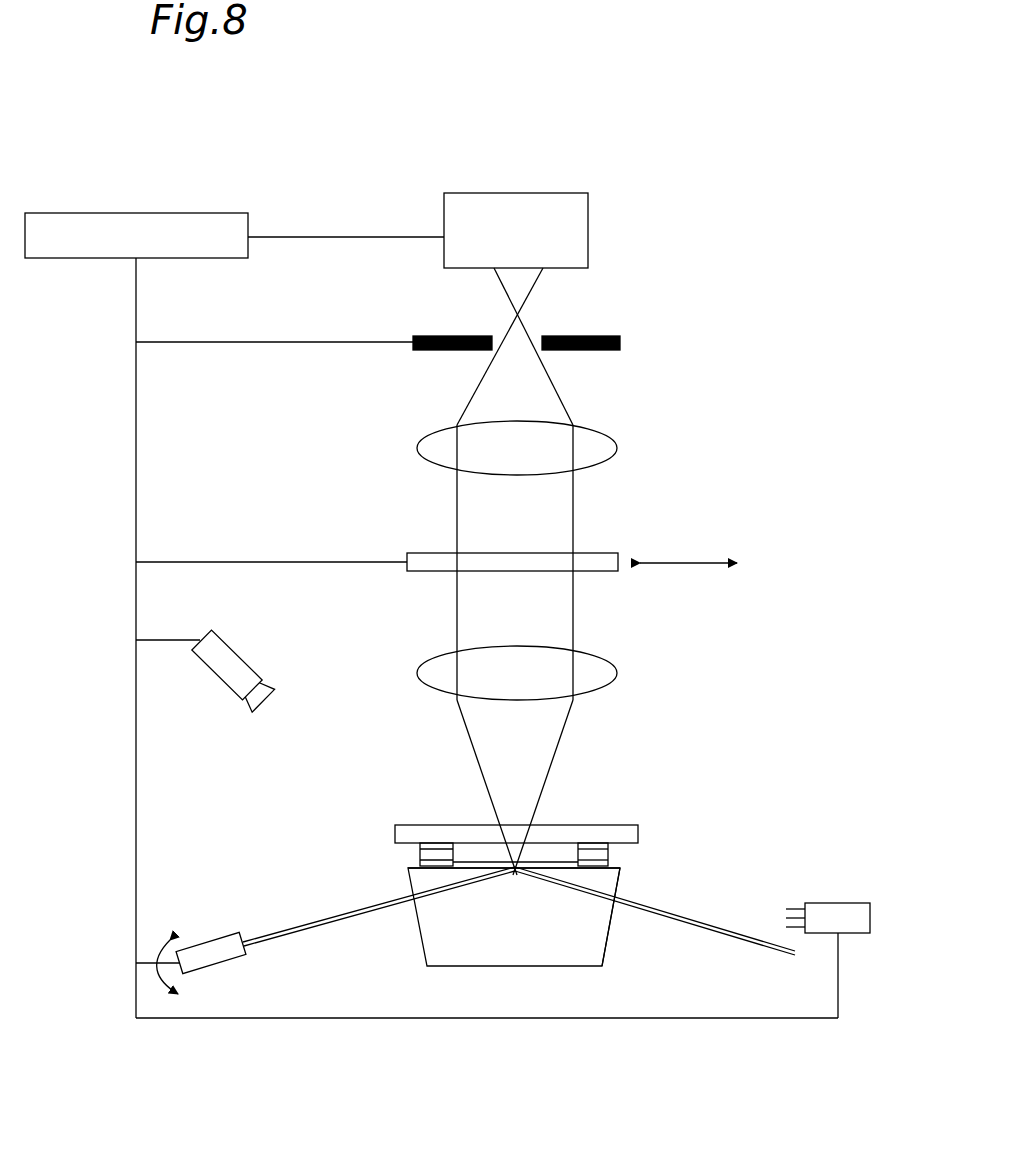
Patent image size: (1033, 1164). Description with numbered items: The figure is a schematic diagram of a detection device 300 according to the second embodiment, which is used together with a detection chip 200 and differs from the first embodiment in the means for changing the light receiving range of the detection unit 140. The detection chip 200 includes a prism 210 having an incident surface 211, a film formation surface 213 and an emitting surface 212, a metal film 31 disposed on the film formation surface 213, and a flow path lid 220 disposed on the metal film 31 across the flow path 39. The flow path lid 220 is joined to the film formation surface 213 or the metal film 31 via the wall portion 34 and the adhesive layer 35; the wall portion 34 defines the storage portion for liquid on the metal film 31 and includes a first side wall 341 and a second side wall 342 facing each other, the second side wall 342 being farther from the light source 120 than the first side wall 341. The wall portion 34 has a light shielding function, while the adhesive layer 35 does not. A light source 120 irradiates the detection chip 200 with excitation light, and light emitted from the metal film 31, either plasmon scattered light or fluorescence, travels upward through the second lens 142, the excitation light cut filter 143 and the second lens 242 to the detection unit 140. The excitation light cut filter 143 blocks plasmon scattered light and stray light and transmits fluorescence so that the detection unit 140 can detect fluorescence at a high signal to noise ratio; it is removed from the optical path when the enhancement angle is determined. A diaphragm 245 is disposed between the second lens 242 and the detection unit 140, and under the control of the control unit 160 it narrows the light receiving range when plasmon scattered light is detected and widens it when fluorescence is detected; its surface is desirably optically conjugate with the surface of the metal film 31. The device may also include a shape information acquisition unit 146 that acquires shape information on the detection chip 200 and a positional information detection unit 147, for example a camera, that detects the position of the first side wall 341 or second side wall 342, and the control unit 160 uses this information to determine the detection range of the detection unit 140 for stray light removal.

The control unit 160 is at (125, 213).
The detection device 300 is at (772, 245).
The detection unit 140 is at (588, 237).
The diaphragm 245 is at (565, 338).
The second lens 242 is at (417, 448).
The excitation light cut filter 143 is at (407, 558).
The positional information detection unit 147 is at (240, 650).
The second lens 142 is at (417, 673).
The detection chip 200 is at (526, 856).
The flow path lid 220 is at (637, 830).
The wall portion 34 is at (538, 860).
The first side wall 341 is at (420, 856).
The second side wall 342 is at (608, 858).
The adhesive layer 35 is at (608, 847).
The metal film 31 is at (540, 862).
The flow path 39 is at (473, 857).
The prism 210 is at (448, 933).
The incident surface 211 is at (405, 892).
The film formation surface 213 is at (557, 873).
The emitting surface 212 is at (605, 945).
The light source 120 is at (200, 933).
The shape information acquisition unit 146 is at (838, 903).